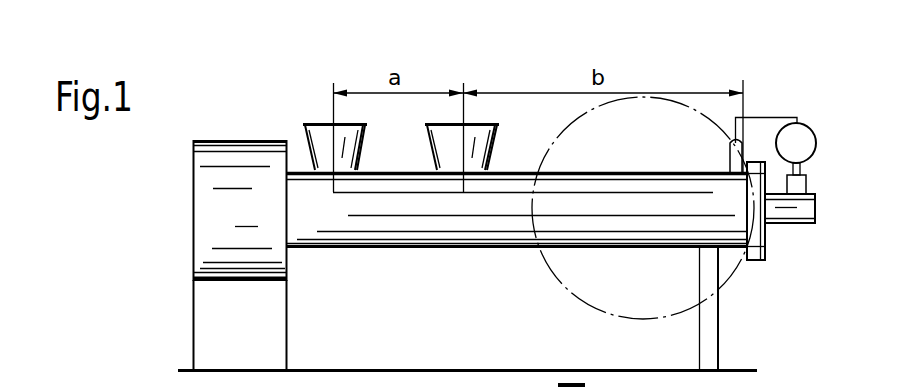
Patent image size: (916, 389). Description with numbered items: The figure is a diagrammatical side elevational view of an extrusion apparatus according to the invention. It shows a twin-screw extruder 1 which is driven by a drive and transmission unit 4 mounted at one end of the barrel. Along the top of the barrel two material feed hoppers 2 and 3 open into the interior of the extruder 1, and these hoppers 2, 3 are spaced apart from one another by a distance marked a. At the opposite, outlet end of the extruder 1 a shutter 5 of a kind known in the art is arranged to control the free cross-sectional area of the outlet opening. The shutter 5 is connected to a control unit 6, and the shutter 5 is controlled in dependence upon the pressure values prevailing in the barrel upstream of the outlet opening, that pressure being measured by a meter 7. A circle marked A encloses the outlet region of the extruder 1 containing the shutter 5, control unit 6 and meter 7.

The twin-screw extruder 1 is at (407, 222).
The material feed hopper 2 is at (318, 138).
The material feed hopper 3 is at (448, 157).
The drive and transmission unit 4 is at (215, 172).
The shutter 5 is at (797, 187).
The control unit 6 is at (815, 143).
The meter 7 is at (740, 143).
The detail circle A is at (723, 287).